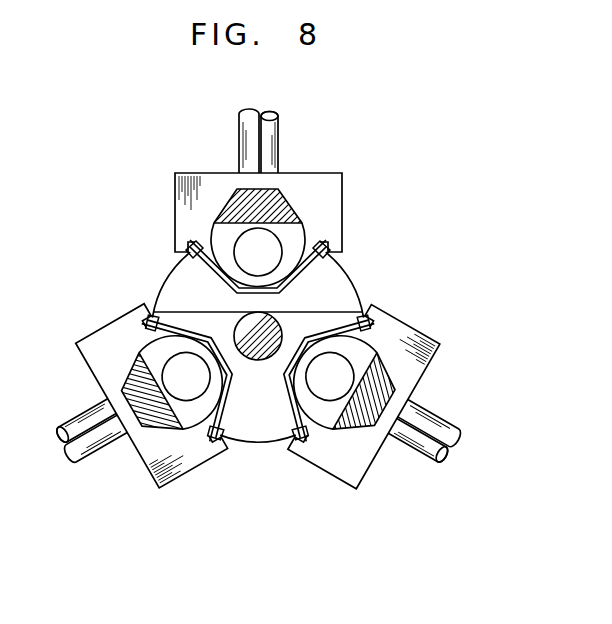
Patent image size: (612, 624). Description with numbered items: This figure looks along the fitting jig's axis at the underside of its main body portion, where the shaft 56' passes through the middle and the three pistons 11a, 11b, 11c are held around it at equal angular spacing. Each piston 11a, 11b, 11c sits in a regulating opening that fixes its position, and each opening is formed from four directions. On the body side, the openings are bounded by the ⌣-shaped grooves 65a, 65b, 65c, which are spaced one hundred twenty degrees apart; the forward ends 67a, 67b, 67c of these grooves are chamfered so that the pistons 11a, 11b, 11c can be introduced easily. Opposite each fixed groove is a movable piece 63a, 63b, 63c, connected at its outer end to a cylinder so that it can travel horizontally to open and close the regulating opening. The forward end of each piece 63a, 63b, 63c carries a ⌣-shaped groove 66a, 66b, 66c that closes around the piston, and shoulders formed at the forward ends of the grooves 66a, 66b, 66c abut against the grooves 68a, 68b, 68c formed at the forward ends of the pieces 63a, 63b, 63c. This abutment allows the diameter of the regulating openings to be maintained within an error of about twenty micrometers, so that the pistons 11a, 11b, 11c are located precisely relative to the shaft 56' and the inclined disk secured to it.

The shaft 56' is at (274, 321).
The piece 63a is at (340, 183).
The piece 63b is at (152, 464).
The piece 63c is at (422, 374).
The ⌣-shaped groove 66a is at (210, 242).
The ⌣-shaped groove 66b is at (130, 384).
The ⌣-shaped groove 66c is at (366, 452).
The groove 68a is at (196, 248).
The groove 68b is at (212, 440).
The groove 68c is at (372, 325).
The chamfered forward end 67a is at (190, 263).
The chamfered forward end 67b is at (150, 318).
The chamfered forward end 67c is at (295, 437).
The ⌣-shaped groove 65a is at (320, 245).
The ⌣-shaped groove 65b is at (144, 343).
The ⌣-shaped groove 65c is at (352, 308).
The piston 11a is at (305, 232).
The piston 11b is at (200, 455).
The piston 11c is at (320, 440).